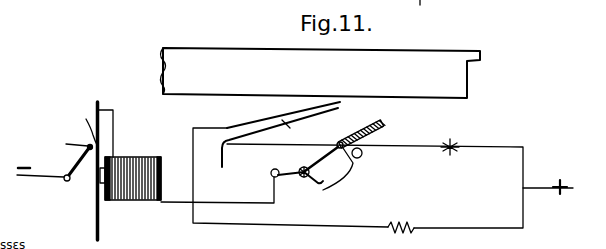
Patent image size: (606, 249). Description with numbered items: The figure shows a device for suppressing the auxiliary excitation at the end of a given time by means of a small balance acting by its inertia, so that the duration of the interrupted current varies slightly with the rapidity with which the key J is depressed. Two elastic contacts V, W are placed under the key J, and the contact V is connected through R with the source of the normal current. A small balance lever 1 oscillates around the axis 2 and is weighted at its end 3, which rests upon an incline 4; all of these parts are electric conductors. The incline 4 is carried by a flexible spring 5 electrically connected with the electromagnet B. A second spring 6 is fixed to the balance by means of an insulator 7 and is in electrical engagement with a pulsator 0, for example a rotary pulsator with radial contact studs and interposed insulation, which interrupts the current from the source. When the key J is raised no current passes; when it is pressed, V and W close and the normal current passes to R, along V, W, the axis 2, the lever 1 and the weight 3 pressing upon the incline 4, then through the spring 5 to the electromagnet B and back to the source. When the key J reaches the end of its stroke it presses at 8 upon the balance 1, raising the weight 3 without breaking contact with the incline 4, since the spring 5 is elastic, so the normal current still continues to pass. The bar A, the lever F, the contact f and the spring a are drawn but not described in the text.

The key J is at (321, 73).
The support bar A is at (96, 219).
The electromagnet B is at (134, 200).
The switch lever F is at (78, 167).
The lever contact f is at (70, 145).
The contact spring a is at (85, 125).
The elastic contact V is at (270, 117).
The elastic contact W is at (293, 131).
The balance lever 1 is at (321, 160).
The axis 2 is at (338, 142).
The weighted end 3 is at (302, 168).
The incline 4 is at (309, 181).
The flexible spring 5 is at (272, 170).
The second spring 6 is at (346, 169).
The insulator 7 is at (383, 125).
The pressing point 8 is at (360, 132).
The pulsator 0 is at (452, 139).
The connection to the normal current source R is at (401, 218).